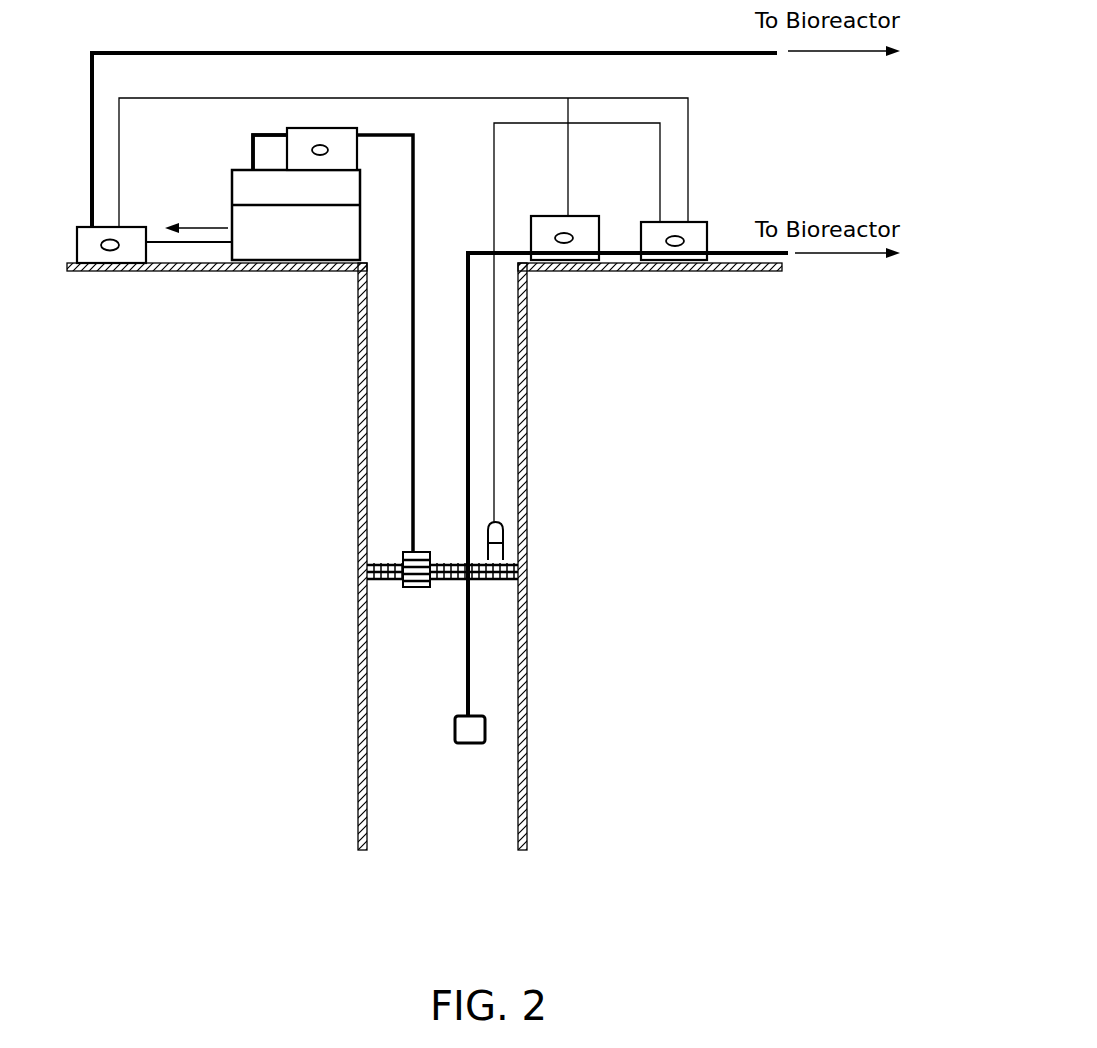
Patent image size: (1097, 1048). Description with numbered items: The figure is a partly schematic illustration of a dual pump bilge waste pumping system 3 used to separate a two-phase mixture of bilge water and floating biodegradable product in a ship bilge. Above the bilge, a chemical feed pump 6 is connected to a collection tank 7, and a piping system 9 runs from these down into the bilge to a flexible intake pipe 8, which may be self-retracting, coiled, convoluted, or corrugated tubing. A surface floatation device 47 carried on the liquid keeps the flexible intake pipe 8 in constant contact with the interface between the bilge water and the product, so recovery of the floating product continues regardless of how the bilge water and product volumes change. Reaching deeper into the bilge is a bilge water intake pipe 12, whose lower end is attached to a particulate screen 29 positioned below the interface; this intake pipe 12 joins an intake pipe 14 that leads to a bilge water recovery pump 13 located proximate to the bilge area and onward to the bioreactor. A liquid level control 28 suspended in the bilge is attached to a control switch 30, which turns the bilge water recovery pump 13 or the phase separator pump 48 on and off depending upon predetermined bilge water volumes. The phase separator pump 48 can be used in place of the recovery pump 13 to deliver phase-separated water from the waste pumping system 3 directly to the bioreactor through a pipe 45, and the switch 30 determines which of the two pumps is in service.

The bilge waste pumping system 3 is at (250, 165).
The chemical feed pump 6 is at (322, 136).
The collection tank 7 is at (296, 215).
The flexible intake pipe 8 is at (442, 556).
The piping system 9 is at (333, 332).
The bilge water intake pipe 12 is at (447, 484).
The bilge water recovery pump 13 is at (567, 224).
The intake pipe 14 is at (627, 239).
The liquid level control 28 is at (503, 547).
The particulate screen 29 is at (492, 727).
The control switch 30 is at (607, 322).
The pipe 45 is at (434, 126).
The surface floatation device 47 is at (402, 587).
The phase separator pump 48 is at (382, 180).